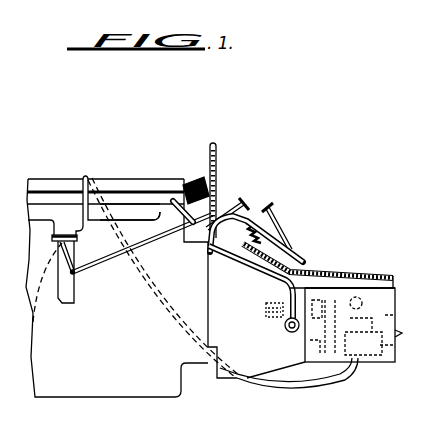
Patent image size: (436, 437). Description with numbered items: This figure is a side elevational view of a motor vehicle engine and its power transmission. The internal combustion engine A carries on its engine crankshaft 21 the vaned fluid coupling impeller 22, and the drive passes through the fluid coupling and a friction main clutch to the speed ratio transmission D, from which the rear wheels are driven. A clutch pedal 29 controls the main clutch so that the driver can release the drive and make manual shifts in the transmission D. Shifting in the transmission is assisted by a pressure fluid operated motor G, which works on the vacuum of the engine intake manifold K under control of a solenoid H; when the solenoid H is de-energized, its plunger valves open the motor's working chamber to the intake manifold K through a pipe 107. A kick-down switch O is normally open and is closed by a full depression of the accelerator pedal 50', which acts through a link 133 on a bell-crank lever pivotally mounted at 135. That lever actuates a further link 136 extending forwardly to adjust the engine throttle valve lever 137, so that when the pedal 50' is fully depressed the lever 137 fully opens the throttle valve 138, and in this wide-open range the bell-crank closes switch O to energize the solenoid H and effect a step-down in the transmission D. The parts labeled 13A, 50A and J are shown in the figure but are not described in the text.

The vaned fluid coupling impeller 22 is at (425, 92).
The engine crankshaft 21 is at (338, 247).
The internal combustion engine A is at (63, 182).
The engine intake manifold K is at (120, 204).
The pad block 13A is at (183, 186).
The kick-down switch O is at (198, 204).
The link 133 is at (220, 204).
The accelerator pedal 50' is at (270, 208).
The clutch pedal 29 is at (279, 194).
The tubular arm 50A is at (283, 227).
The speed ratio transmission D is at (335, 288).
The pressure fluid operated motor G is at (352, 310).
The solenoid H is at (396, 291).
The terminal J is at (393, 337).
The engine throttle valve lever 137 is at (73, 257).
The pivot 135 is at (107, 248).
The link 136 is at (155, 242).
The throttle valve 138 is at (34, 318).
The pipe 107 is at (315, 387).